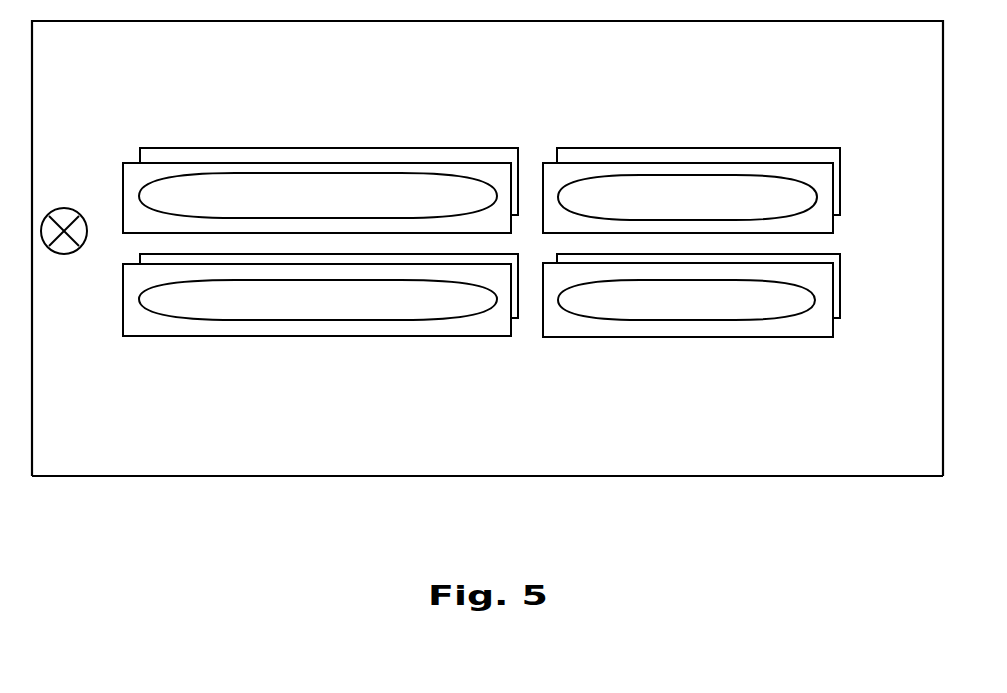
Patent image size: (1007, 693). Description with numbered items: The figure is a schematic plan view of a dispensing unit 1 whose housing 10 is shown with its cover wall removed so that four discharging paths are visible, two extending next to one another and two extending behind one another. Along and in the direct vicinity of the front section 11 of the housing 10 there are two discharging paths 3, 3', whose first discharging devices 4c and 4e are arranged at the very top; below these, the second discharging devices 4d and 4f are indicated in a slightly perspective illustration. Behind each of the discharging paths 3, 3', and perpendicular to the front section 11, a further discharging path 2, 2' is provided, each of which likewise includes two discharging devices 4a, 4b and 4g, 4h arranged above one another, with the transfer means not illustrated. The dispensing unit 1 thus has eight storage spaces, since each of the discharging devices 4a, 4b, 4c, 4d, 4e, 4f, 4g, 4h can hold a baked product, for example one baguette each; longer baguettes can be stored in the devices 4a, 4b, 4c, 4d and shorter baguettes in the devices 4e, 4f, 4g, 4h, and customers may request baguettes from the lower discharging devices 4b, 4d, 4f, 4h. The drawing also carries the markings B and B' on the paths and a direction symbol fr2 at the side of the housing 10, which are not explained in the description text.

The dispensing unit 1 is at (487, 339).
The housing 10 is at (487, 305).
The front section 11 is at (680, 478).
The further discharging path 2 is at (319, 139).
The further discharging path 2' is at (691, 138).
The discharging path 3 is at (326, 355).
The discharging path 3' is at (701, 351).
The discharging device 4a is at (127, 162).
The discharging device 4b is at (180, 148).
The first discharging device 4c is at (170, 337).
The second discharging device 4d is at (519, 305).
The first discharging device 4e is at (566, 337).
The second discharging device 4f is at (840, 295).
The discharging device 4g is at (614, 162).
The discharging device 4h is at (822, 148).
The region B is at (318, 165).
The region B' is at (686, 330).
The direction fr2 is at (88, 243).